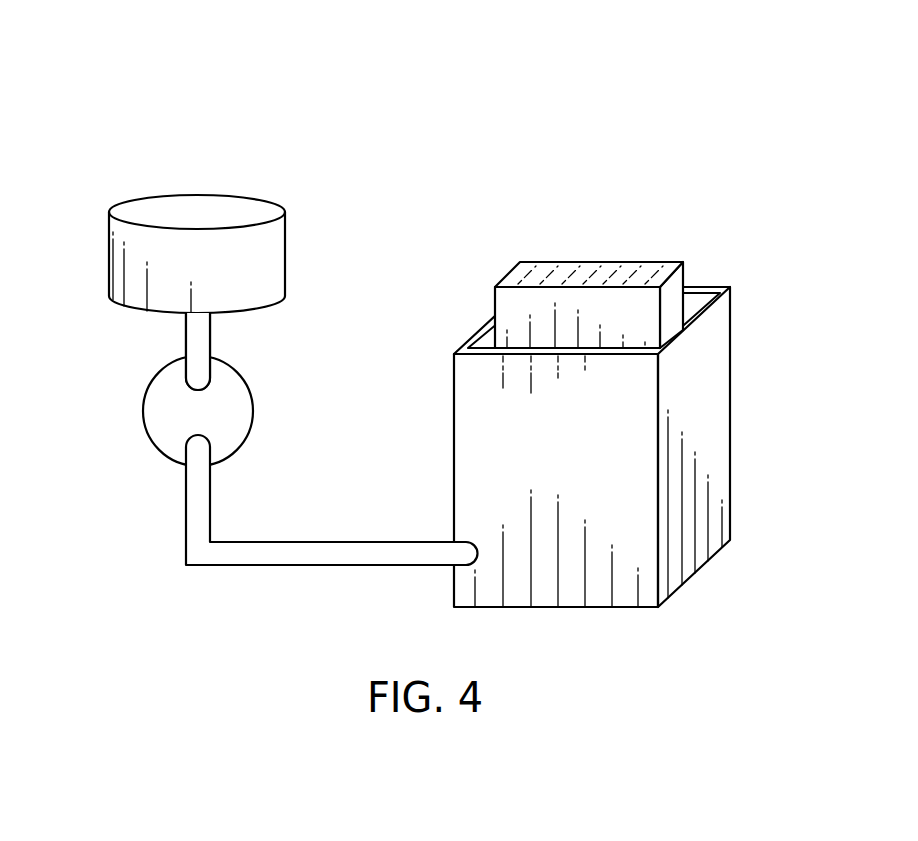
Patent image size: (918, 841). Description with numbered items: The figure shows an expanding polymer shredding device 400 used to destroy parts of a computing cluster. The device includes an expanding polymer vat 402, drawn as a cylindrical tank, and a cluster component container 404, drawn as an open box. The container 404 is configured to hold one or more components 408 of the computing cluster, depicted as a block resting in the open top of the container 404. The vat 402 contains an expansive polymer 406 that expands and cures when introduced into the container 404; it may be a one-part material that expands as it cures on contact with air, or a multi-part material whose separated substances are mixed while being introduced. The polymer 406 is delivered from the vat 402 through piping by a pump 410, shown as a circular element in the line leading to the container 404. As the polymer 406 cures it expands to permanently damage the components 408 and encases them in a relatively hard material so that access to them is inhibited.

The expanding polymer shredding device 400 is at (133, 104).
The expanding polymer vat 402 is at (286, 254).
The cluster component container 404 is at (731, 412).
The expansive polymer 406 is at (165, 276).
The components 408 is at (637, 262).
The pump 410 is at (153, 384).